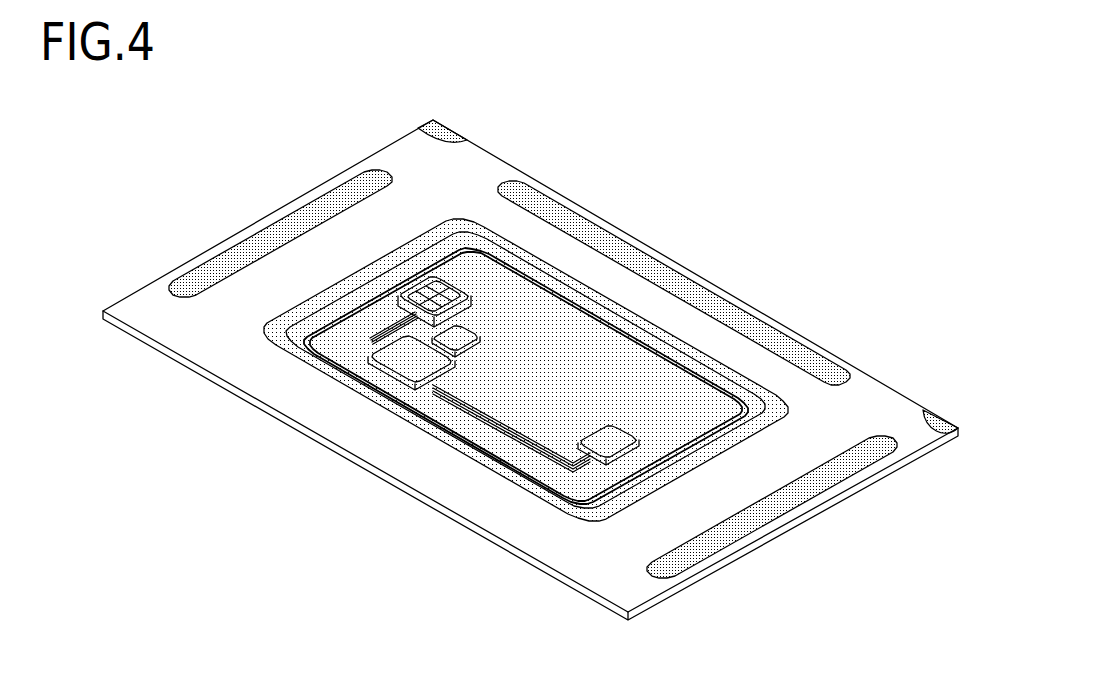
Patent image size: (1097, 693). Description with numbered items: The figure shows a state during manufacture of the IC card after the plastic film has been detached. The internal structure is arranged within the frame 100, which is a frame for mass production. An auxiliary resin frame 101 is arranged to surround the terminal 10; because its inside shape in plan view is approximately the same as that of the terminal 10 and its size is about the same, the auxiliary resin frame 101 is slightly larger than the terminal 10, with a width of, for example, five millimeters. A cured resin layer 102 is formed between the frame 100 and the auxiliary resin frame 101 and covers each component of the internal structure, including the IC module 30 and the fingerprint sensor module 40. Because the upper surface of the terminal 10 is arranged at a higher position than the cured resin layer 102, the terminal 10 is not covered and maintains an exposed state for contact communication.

The frame 100 is at (190, 307).
The cured resin layer 102 is at (648, 380).
The terminal 10 is at (455, 180).
The auxiliary resin frame 101 is at (456, 298).
The IC module 30 is at (403, 358).
The fingerprint sensor module 40 is at (622, 427).